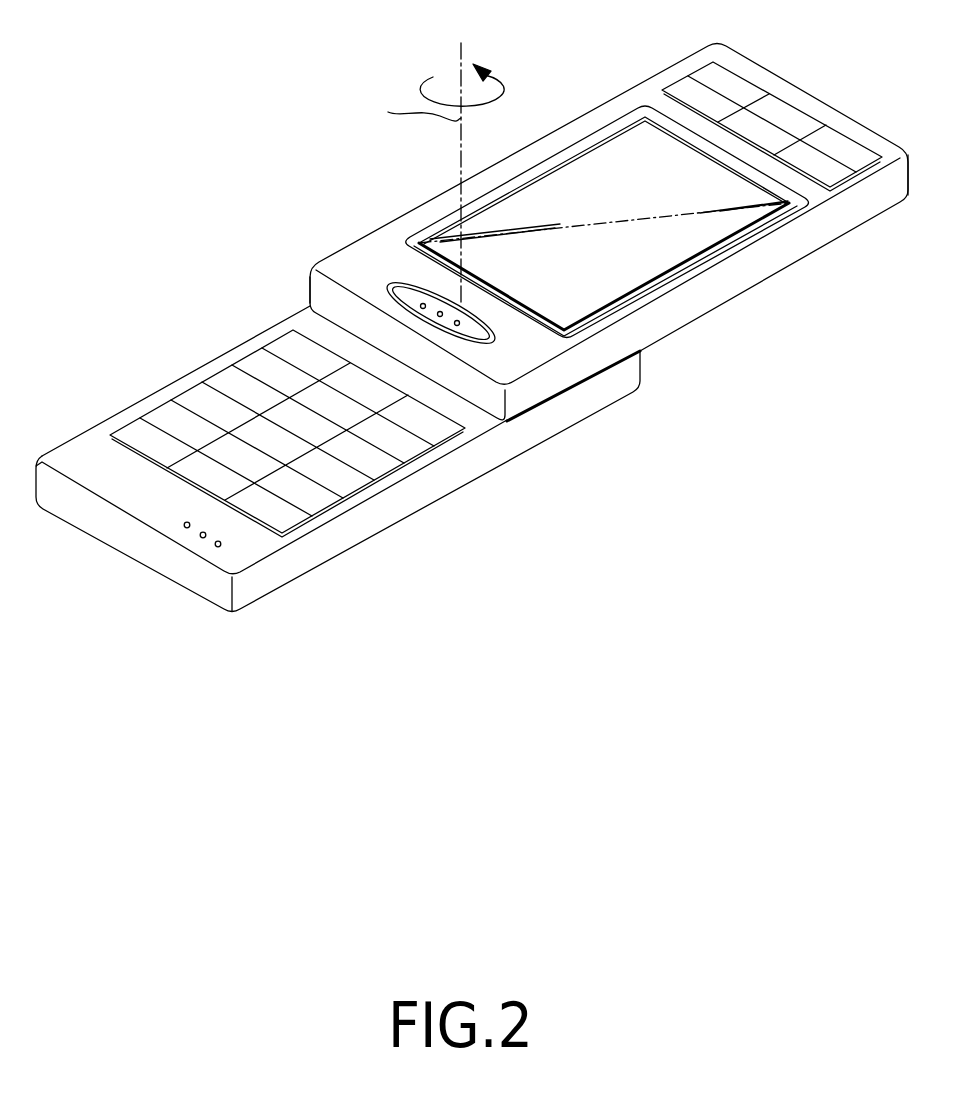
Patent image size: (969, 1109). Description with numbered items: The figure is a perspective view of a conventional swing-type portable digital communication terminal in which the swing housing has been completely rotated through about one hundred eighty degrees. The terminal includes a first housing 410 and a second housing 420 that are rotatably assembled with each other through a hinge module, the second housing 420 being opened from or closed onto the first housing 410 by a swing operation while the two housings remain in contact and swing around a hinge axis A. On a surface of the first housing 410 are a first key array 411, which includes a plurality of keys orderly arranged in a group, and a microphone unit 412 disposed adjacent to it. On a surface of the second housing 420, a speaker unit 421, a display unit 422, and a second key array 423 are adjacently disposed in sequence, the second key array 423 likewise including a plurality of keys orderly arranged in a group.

The first housing 410 is at (102, 568).
The first key array 411 is at (340, 478).
The microphone unit 412 is at (218, 547).
The second housing 420 is at (366, 206).
The speaker unit 421 is at (488, 334).
The display unit 422 is at (643, 260).
The second key array 423 is at (792, 122).